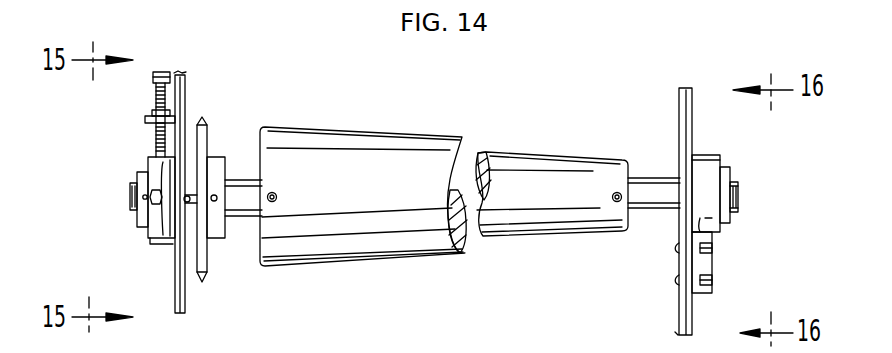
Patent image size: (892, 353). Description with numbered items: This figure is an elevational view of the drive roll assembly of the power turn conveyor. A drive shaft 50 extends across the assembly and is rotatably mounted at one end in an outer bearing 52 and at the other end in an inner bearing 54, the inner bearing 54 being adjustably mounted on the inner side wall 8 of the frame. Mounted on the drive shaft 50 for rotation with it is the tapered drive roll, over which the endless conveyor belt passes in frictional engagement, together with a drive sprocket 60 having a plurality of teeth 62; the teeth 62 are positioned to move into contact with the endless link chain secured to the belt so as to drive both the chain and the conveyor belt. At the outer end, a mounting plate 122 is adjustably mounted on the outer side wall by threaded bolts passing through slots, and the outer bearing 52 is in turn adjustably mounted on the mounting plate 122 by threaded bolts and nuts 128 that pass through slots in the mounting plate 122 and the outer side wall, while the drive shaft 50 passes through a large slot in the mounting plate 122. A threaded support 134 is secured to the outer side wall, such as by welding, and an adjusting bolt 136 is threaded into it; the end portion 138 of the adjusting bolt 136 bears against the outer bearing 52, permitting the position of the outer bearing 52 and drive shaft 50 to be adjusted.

The inner side wall 8 is at (680, 97).
The drive shaft 50 is at (739, 198).
The outer bearing 52 is at (151, 234).
The inner bearing 54 is at (710, 167).
The drive sprocket 60 is at (209, 143).
The teeth 62 is at (204, 118).
The mounting plate 122 is at (177, 73).
The threaded bolts and nuts 128 is at (156, 205).
The threaded support 134 is at (146, 119).
The adjusting bolt 136 is at (155, 97).
The end portion 138 is at (156, 153).